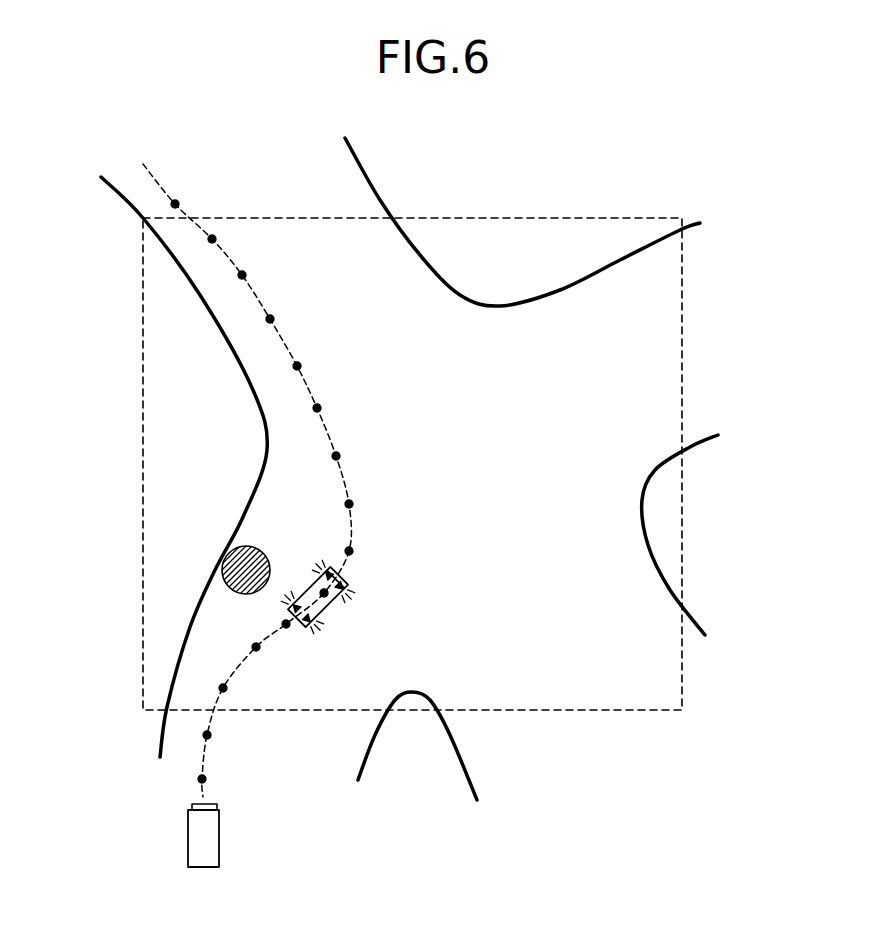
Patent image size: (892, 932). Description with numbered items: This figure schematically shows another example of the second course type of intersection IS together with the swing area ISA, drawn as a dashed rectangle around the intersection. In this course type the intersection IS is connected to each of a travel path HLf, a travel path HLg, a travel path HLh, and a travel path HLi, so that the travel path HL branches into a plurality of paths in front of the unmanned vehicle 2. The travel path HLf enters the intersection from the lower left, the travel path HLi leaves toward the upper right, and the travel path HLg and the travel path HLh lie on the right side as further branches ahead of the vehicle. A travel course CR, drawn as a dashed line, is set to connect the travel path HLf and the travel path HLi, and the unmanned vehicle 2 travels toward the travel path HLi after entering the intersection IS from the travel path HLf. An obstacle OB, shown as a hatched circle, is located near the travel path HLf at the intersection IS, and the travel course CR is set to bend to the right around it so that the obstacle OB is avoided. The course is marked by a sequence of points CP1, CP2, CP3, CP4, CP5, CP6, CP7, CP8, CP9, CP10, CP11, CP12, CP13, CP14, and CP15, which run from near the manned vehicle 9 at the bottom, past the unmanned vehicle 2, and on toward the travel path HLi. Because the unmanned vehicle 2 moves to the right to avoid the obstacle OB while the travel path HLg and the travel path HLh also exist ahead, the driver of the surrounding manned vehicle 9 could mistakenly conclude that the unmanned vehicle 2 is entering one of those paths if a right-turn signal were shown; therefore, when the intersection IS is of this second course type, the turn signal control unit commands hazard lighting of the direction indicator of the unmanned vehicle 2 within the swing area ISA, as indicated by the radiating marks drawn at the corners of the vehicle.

The travel course CR is at (157, 177).
The control point 1 CP1 is at (205, 779).
The control point 2 CP2 is at (210, 735).
The control point 3 CP3 is at (226, 688).
The control point 4 CP4 is at (259, 650).
The control point 5 CP5 is at (283, 626).
The control point 6 CP6 is at (353, 585).
The control point 7 CP7 is at (352, 551).
The control point 8 CP8 is at (352, 504).
The control point 9 CP9 is at (339, 456).
The control point 10 CP10 is at (320, 408).
The control point 11 CP11 is at (300, 366).
The control point 12 CP12 is at (273, 319).
The control point 13 CP13 is at (245, 275).
The control point 14 CP14 is at (215, 239).
The control point 15 CP15 is at (178, 204).
The travel path HL is at (522, 222).
The travel path HLi is at (355, 176).
The travel path HLh is at (704, 428).
The travel path HLg is at (686, 628).
The travel path HLf is at (168, 742).
The swing area ISA is at (682, 680).
The intersection IS is at (408, 728).
The obstacle OB is at (226, 553).
The unmanned vehicle 2 is at (285, 597).
The manned vehicle 9 is at (219, 837).